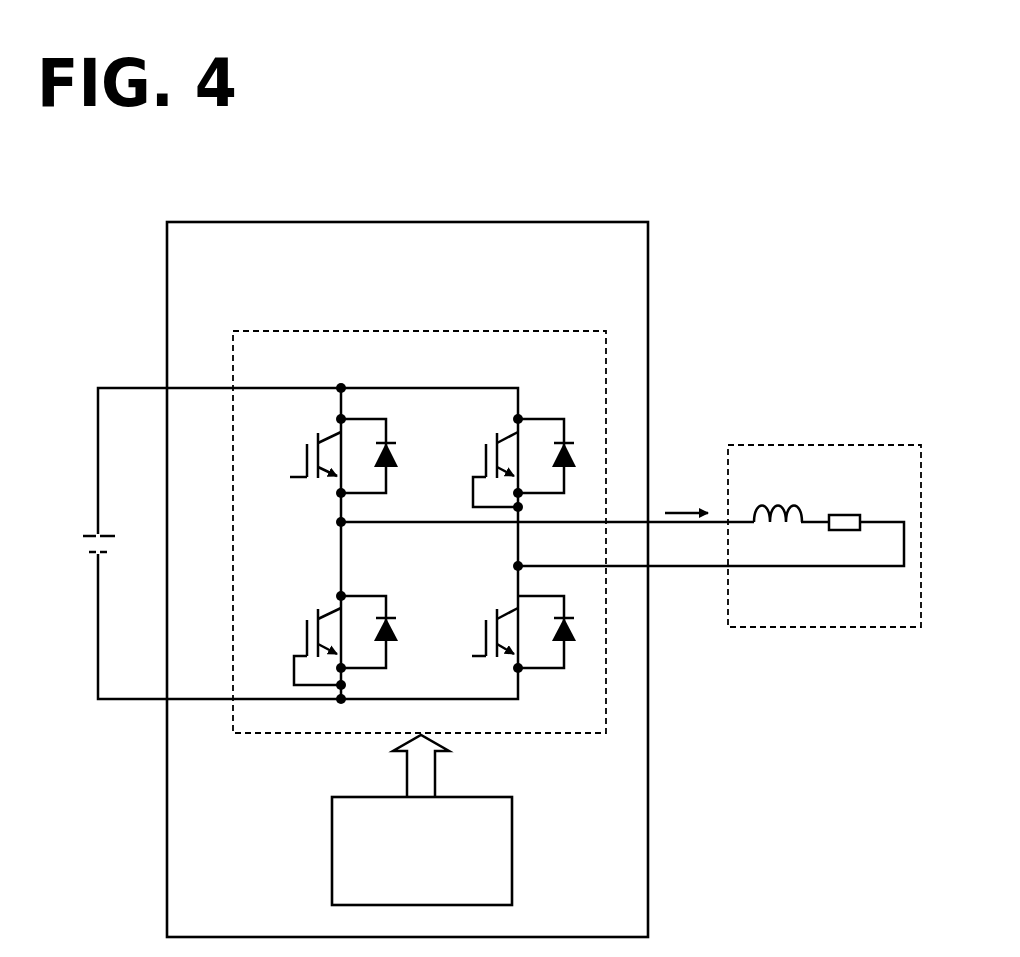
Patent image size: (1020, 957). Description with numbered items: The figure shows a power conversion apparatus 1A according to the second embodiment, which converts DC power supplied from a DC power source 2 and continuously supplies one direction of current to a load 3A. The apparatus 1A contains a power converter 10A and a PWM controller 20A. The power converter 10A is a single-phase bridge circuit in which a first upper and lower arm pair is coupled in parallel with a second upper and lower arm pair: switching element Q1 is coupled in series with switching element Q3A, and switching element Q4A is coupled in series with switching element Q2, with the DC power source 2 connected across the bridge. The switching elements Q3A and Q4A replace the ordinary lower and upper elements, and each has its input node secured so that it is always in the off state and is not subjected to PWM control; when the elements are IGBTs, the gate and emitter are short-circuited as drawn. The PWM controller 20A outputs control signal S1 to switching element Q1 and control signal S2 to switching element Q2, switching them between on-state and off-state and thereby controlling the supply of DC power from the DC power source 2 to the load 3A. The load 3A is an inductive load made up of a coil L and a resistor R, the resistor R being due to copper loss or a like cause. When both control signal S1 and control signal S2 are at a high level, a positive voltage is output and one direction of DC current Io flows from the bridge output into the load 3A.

The power conversion apparatus 1A is at (412, 222).
The power converter 10A is at (420, 331).
The DC power source 2 is at (84, 535).
The load 3A is at (719, 512).
The PWM controller 20A is at (512, 855).
The switching element Q1 is at (290, 434).
The switching element Q2 is at (467, 612).
The switching element Q3A is at (292, 612).
The switching element Q4A is at (465, 435).
The control signal S1 is at (285, 480).
The control signal S2 is at (462, 656).
The coil L is at (770, 499).
The resistor R is at (836, 499).
The DC current Io is at (686, 501).